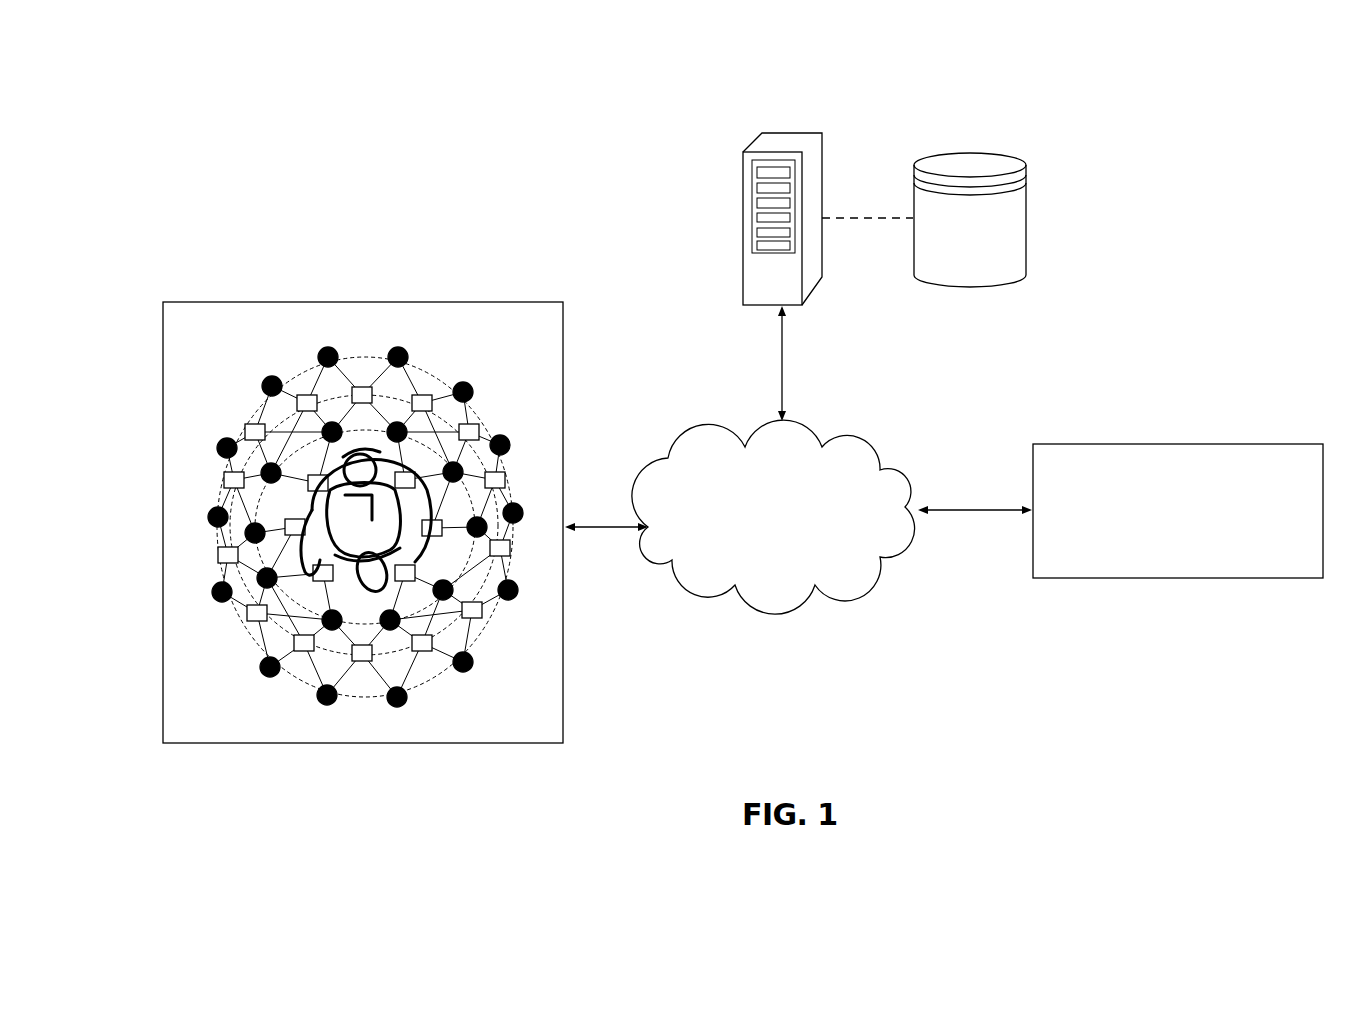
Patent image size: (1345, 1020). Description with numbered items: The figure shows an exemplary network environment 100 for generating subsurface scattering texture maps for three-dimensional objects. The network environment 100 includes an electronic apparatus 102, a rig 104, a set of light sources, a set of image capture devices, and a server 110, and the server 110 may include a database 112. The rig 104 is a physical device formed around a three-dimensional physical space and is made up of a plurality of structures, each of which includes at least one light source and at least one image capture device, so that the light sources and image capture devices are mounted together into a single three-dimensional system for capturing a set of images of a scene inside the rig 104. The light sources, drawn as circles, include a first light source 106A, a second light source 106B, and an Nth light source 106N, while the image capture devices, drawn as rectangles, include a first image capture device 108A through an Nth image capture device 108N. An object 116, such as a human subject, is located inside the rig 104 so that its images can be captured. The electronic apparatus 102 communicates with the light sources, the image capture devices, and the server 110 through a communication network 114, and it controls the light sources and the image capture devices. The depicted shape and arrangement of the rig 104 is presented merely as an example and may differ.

The network environment 100 is at (134, 138).
The electronic apparatus 102 is at (1178, 511).
The rig 104 is at (469, 328).
The first light source 106A is at (212, 513).
The second light source 106B is at (322, 350).
The Nth light source 106N is at (468, 668).
The first image capture device 108A is at (248, 426).
The Nth image capture device 108N is at (252, 618).
The server 110 is at (822, 277).
The database 112 is at (1008, 165).
The communication network 114 is at (773, 517).
The object 116 is at (417, 547).